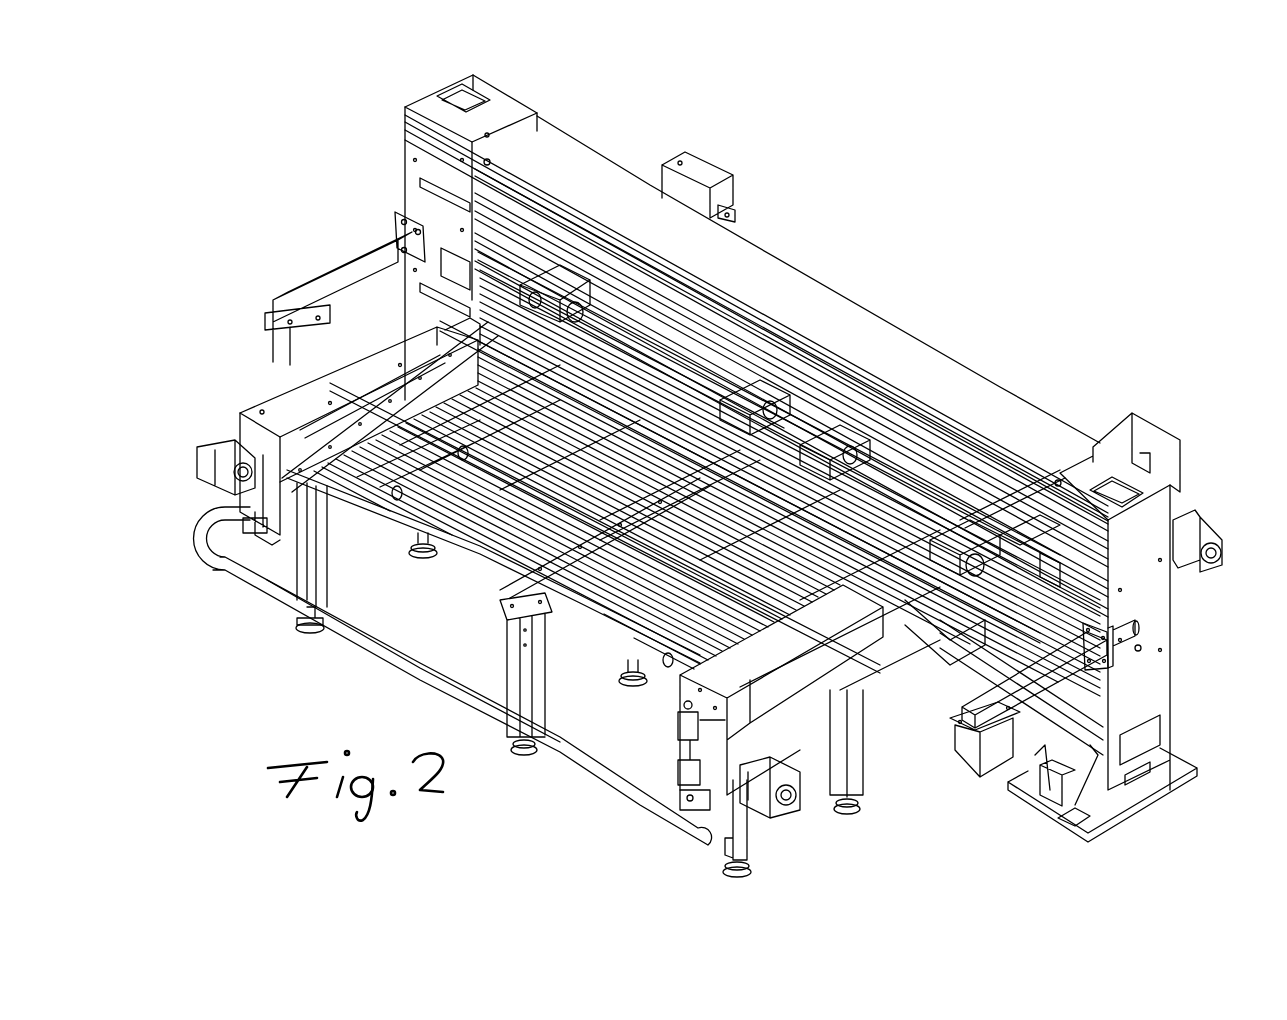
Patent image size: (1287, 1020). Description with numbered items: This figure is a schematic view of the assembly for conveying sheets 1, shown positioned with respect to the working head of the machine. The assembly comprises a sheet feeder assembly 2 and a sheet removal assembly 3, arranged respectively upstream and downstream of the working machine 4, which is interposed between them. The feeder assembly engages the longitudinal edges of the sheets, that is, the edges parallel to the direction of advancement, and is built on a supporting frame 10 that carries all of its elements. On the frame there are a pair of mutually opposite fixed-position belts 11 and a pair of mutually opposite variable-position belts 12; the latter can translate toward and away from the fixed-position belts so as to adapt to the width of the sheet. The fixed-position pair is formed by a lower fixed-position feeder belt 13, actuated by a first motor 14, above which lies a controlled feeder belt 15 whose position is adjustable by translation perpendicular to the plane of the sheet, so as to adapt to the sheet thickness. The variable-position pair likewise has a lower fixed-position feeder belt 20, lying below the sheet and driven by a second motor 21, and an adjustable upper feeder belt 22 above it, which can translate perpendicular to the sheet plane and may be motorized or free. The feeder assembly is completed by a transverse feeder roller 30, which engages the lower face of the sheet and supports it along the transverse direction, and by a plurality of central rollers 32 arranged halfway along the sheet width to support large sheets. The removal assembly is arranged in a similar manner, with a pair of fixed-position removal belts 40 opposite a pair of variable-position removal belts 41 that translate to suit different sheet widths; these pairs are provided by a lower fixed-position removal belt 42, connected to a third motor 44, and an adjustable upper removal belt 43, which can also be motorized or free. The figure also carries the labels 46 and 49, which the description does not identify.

The assembly for conveying sheets 1 is at (342, 247).
The sheet feeder assembly 2 is at (332, 390).
The sheet removal assembly 3 is at (675, 175).
The working machine 4 is at (404, 130).
The supporting frame 10 is at (751, 835).
The pair of mutually opposite fixed-position belts 11 is at (813, 690).
The pair of mutually opposite variable-position belts 12 is at (288, 407).
The lower fixed-position feeder belt 13 is at (866, 655).
The first motor 14 is at (763, 795).
The controlled feeder belt 15 is at (903, 640).
The lower fixed-position feeder belt 20 is at (338, 558).
The second motor 21 is at (210, 468).
The adjustable upper feeder belt 22 is at (347, 527).
The transverse feeder roller 30 is at (795, 520).
The central rollers 32 is at (538, 572).
The pair of fixed-position removal belts 40 is at (985, 522).
The pair of variable-position removal belts 41 is at (546, 294).
The lower fixed-position removal belt 42 is at (985, 578).
The adjustable upper removal belt 43 is at (965, 540).
The third motor 44 is at (1203, 527).
The guide rail 46 is at (600, 300).
The roller 49 is at (745, 395).